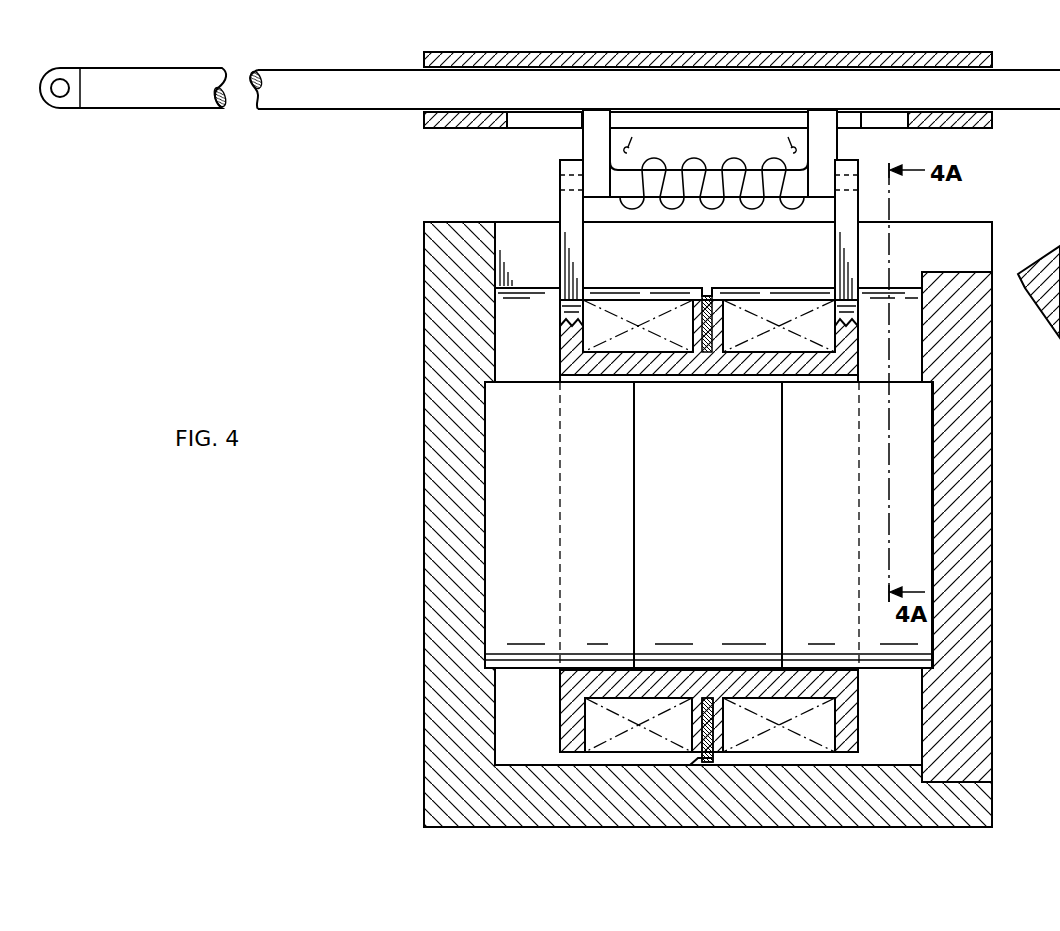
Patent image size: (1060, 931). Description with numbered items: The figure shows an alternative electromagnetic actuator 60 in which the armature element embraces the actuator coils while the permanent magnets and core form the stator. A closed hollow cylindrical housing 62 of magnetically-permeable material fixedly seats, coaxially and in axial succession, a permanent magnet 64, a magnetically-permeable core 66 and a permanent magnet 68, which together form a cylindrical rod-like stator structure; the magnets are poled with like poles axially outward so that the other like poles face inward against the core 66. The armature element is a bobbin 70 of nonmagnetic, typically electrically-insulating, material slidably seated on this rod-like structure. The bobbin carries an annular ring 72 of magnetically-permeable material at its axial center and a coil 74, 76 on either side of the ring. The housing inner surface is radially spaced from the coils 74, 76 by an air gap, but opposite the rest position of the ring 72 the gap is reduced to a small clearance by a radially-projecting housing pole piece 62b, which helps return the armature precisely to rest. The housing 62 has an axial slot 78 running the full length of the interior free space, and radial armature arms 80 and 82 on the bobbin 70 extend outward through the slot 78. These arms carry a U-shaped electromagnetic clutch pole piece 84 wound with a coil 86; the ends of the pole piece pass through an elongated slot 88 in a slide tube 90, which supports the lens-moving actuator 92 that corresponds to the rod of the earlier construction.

The electromagnetic actuator 60 is at (994, 466).
The housing 62 is at (443, 724).
The housing pole piece 62b is at (695, 765).
The permanent magnet 64 is at (597, 574).
The core 66 is at (719, 574).
The permanent magnet 68 is at (845, 574).
The bobbin 70 is at (560, 353).
The annular ring 72 is at (708, 296).
The coil 74 is at (617, 310).
The coil 76 is at (758, 302).
The axial slot 78 is at (912, 237).
The armature arm 80 is at (578, 243).
The armature arm 82 is at (845, 243).
The electromagnetic clutch pole piece 84 is at (825, 148).
The coil 86 is at (690, 162).
The elongated slot 88 is at (548, 130).
The slide tube 90 is at (455, 129).
The lens-moving actuator 92 is at (332, 69).